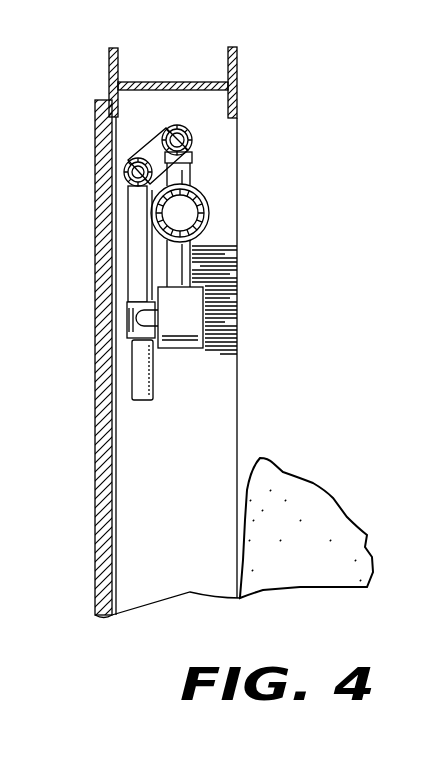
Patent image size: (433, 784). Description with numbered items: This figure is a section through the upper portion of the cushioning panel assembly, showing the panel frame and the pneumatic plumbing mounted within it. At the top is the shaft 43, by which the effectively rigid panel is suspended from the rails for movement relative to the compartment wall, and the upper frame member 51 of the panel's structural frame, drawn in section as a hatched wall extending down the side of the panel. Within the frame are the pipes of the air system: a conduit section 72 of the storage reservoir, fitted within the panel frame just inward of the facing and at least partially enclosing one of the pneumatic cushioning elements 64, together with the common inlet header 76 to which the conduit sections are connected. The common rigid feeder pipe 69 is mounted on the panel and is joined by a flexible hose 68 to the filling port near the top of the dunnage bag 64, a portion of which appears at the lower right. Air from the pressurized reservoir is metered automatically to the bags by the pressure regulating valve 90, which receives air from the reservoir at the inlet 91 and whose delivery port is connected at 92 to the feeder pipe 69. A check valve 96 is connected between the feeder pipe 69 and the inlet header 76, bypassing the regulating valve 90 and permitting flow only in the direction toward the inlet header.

The shaft 43 is at (174, 0).
The upper frame member 51 is at (122, 58).
The check valve 96 is at (147, 160).
The inlet header 76 is at (190, 142).
The feeder pipe 69 is at (131, 188).
The conduit section 72 is at (206, 209).
The valve inlet 91 is at (192, 258).
The pressure regulating valve 90 is at (203, 312).
The delivery port connection 92 is at (133, 320).
The flexible hose 68 is at (138, 378).
The pneumatic cushioning element 64 is at (352, 553).